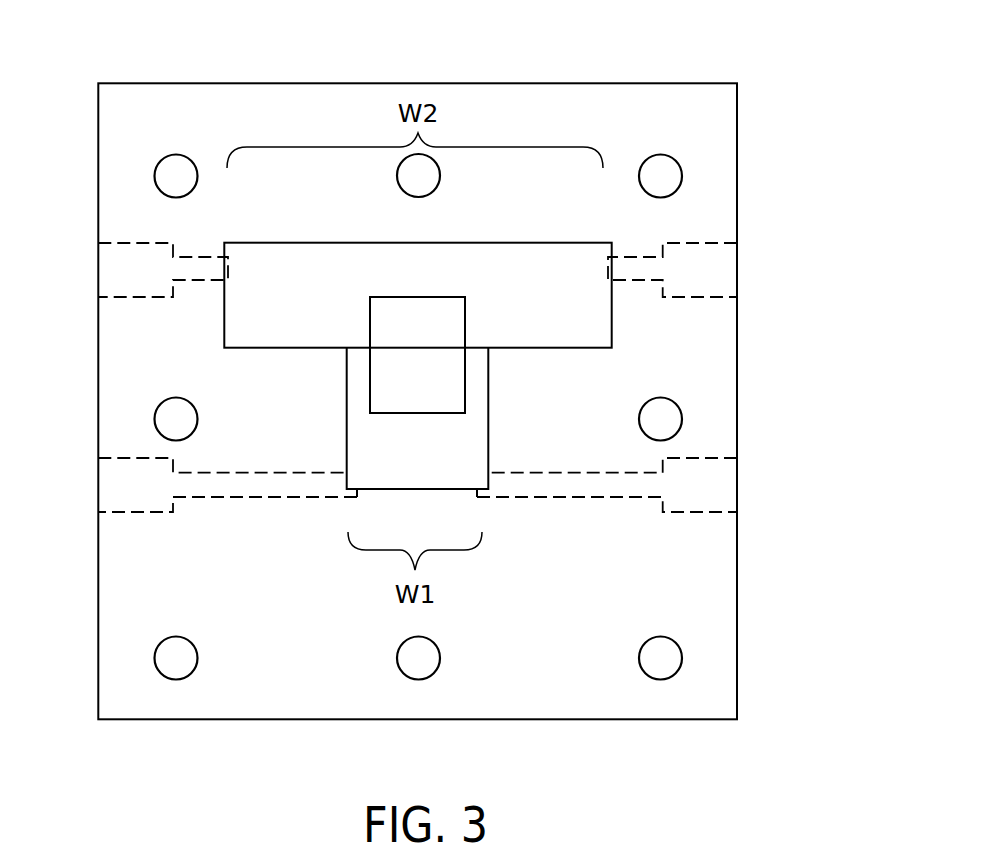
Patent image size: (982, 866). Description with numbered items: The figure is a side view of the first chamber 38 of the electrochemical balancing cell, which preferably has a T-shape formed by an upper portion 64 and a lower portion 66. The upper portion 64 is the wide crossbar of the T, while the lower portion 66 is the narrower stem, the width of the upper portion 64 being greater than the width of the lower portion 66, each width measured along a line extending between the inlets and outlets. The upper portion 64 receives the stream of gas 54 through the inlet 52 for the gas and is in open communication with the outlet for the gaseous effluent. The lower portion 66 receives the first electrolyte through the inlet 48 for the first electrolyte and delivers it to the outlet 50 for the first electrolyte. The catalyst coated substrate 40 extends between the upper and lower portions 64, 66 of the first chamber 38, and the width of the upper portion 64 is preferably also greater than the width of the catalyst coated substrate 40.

The first chamber 38 is at (530, 261).
The catalyst coated substrate 40 is at (390, 323).
The inlet for the first electrolyte 48 is at (107, 481).
The outlet for the first electrolyte 50 is at (730, 488).
The inlet for a stream of gas 52 is at (107, 275).
The stream of gas 54 is at (730, 267).
The upper portion 64 is at (593, 333).
The lower portion 66 is at (472, 430).